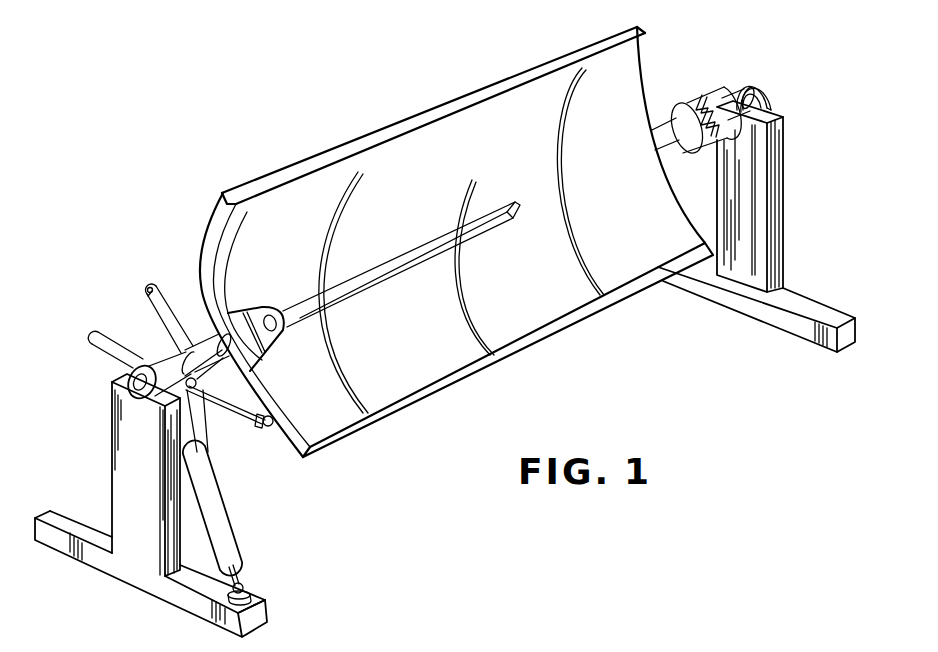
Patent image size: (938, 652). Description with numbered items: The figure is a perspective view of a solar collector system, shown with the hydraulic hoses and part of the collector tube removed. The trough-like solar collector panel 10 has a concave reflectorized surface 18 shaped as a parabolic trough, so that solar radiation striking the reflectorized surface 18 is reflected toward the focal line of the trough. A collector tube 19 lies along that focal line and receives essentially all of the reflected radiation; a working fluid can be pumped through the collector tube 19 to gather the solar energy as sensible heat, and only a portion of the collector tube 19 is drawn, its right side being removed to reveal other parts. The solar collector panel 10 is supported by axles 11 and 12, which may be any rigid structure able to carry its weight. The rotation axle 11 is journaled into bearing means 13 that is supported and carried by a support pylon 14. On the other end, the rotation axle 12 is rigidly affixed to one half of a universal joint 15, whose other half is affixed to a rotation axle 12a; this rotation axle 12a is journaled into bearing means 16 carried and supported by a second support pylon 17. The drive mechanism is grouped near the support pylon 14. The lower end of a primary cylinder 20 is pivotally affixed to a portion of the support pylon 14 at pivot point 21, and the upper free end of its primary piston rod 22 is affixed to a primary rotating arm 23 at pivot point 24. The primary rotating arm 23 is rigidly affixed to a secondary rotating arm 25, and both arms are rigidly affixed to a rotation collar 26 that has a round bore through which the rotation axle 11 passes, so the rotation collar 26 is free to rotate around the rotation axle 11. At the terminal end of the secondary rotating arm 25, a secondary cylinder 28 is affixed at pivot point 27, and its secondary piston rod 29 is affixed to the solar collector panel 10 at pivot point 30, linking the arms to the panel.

The solar collector panel 10 is at (443, 104).
The rotation axle 11 is at (165, 412).
The rotation axle 12 is at (652, 130).
The rotation axle 12a is at (732, 97).
The bearing means 13 is at (129, 383).
The support pylon 14 is at (112, 453).
The universal joint 15 is at (688, 103).
The bearing means 16 is at (770, 92).
The support pylon 17 is at (783, 162).
The reflectorized surface 18 is at (490, 157).
The collector tube 19 is at (378, 262).
The primary cylinder 20 is at (231, 527).
The pivot point 21 is at (246, 584).
The primary piston rod 22 is at (149, 297).
The primary rotating arm 23 is at (158, 284).
The pivot point 24 is at (148, 290).
The secondary rotating arm 25 is at (196, 385).
The rotation collar 26 is at (226, 313).
The pivot point 27 is at (201, 396).
The secondary cylinder 28 is at (93, 335).
The secondary piston rod 29 is at (256, 427).
The pivot point 30 is at (271, 427).